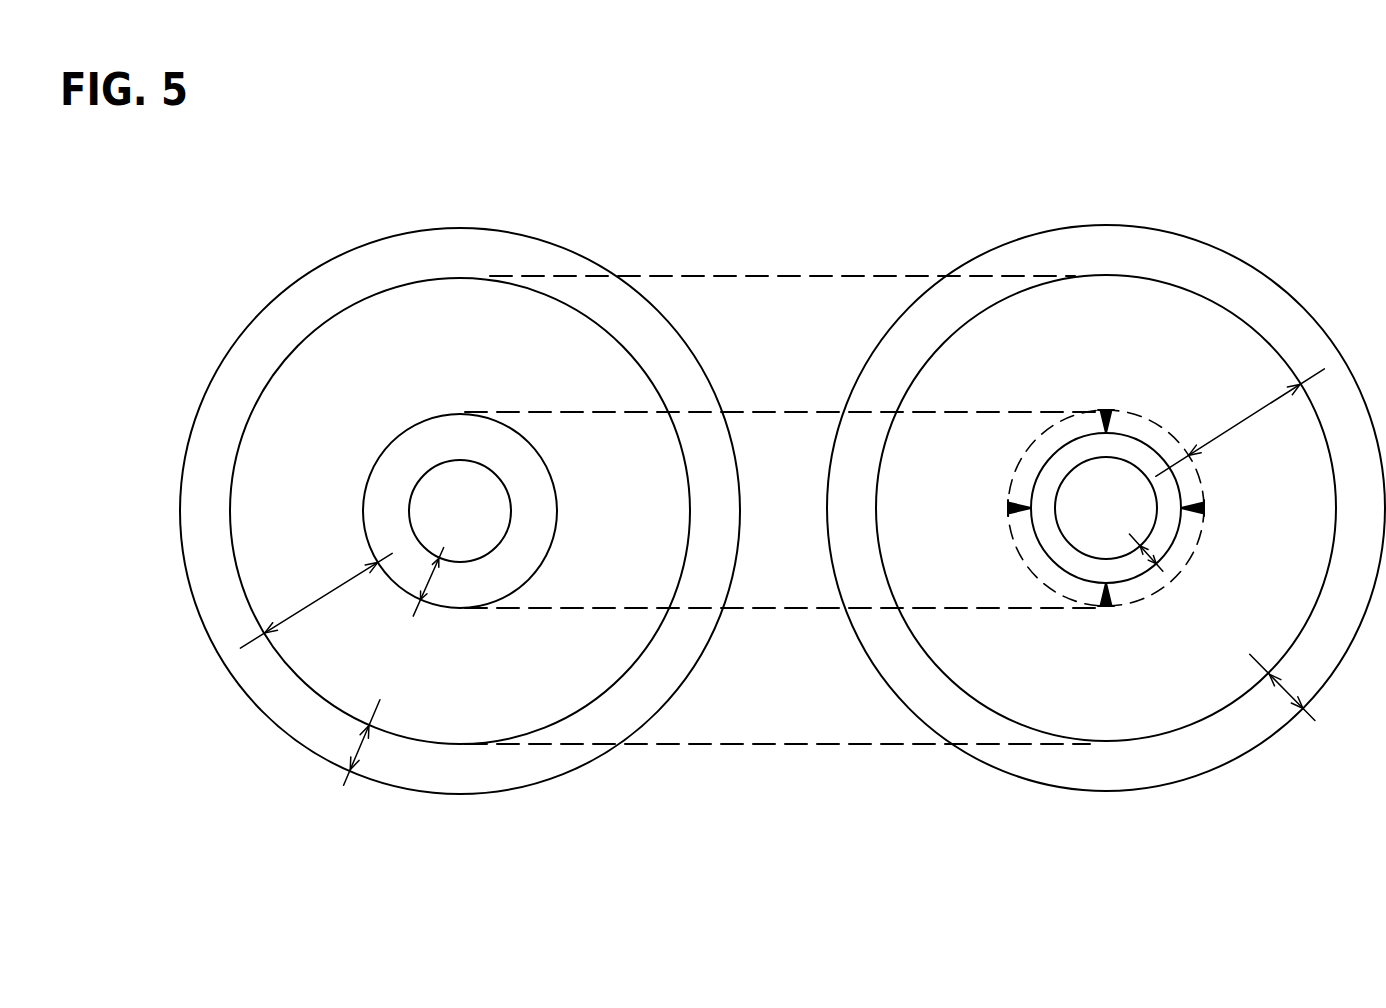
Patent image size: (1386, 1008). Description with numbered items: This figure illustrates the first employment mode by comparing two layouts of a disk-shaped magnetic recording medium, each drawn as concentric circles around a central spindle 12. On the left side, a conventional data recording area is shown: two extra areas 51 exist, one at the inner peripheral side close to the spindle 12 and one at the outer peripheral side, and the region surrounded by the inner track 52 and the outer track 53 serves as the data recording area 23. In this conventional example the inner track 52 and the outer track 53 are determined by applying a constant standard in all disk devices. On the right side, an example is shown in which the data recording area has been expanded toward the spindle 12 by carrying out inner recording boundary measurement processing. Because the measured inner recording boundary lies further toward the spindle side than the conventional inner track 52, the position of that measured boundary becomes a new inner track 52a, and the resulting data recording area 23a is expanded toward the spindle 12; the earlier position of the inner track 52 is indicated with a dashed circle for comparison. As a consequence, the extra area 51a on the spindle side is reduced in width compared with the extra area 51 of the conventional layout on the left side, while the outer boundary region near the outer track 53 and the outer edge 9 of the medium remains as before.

The fixing roller 9 is at (535, 783).
The spindle 12 is at (418, 477).
The data recording area 23 is at (292, 616).
The data recording area 23a is at (1245, 419).
The extra area 51 is at (430, 580).
The extra area 51a is at (1148, 555).
The inner track 52 is at (555, 532).
The inner track 52a is at (1177, 490).
The outer track 53 is at (687, 498).